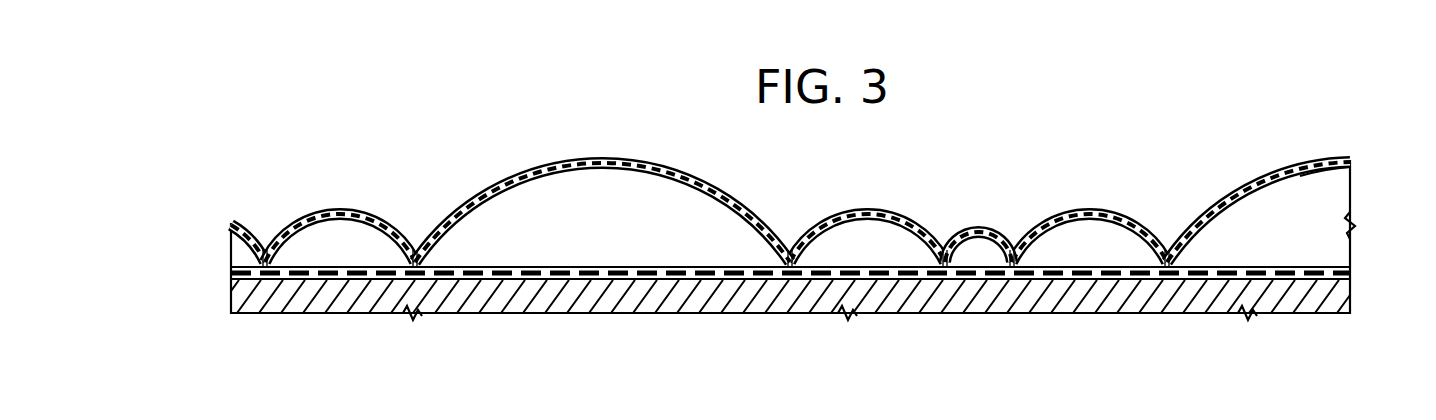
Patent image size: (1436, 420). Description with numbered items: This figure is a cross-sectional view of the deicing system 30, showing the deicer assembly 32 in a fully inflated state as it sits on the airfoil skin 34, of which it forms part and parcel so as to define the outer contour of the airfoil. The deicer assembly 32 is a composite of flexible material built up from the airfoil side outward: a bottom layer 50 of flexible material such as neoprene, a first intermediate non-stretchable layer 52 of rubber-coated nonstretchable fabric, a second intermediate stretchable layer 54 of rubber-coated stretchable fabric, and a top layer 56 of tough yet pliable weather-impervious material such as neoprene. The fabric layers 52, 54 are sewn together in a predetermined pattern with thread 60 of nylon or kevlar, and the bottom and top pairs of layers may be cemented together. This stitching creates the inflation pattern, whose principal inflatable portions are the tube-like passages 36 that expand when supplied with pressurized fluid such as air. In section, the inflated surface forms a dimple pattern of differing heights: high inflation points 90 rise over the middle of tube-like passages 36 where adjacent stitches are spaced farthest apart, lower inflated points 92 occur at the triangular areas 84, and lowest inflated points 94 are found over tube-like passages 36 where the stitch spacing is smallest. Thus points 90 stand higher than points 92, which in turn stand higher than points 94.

The deicing system 30 is at (1062, 158).
The deicer assembly 32 is at (823, 171).
The airfoil skin 34 is at (788, 272).
The tube-like passages 36 is at (585, 245).
The bottom layer 50 is at (1315, 279).
The first intermediate non-stretchable layer 52 is at (1336, 262).
The second intermediate stretchable layer 54 is at (1330, 174).
The top layer 56 is at (1316, 157).
The thread 60 is at (258, 262).
The triangular areas 84 is at (335, 245).
The high inflation points 90 is at (609, 160).
The lower inflated points 92 is at (342, 209).
The lowest inflated points 94 is at (979, 229).